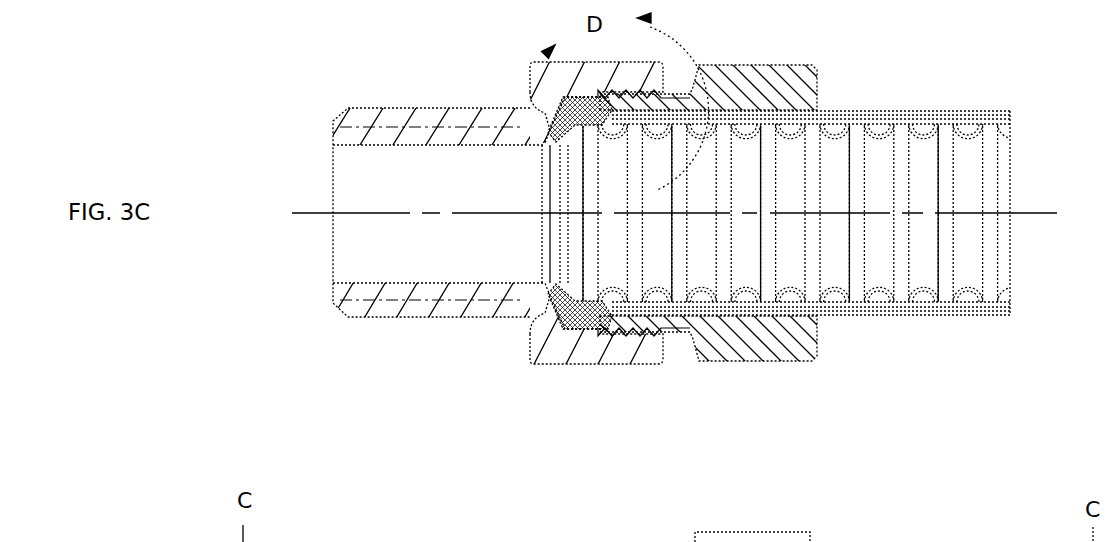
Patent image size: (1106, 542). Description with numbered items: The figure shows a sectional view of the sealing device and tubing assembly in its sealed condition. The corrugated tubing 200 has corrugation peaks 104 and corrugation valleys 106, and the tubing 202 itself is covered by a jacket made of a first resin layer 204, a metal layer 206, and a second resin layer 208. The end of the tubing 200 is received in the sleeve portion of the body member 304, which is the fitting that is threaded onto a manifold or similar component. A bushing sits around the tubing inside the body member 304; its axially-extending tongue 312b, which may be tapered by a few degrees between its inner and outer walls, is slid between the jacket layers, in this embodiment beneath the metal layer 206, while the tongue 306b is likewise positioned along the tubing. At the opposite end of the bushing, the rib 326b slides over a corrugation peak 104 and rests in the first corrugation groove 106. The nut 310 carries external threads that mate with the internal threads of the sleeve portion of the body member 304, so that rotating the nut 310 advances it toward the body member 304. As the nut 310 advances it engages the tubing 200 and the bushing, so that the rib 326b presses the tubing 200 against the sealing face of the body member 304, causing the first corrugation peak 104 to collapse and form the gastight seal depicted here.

The corrugation peak 104 is at (542, 278).
The corrugation valley 106 is at (553, 151).
The tubing 200 is at (843, 331).
The tubing 202 is at (1007, 290).
The first resin layer 204 is at (1007, 310).
The metal layer 206 is at (965, 310).
The second resin layer 208 is at (918, 317).
The body member 304 is at (362, 328).
The tongue 306b is at (575, 345).
The nut 310 is at (753, 371).
The tongue 312b is at (651, 333).
The rib 326b is at (566, 305).